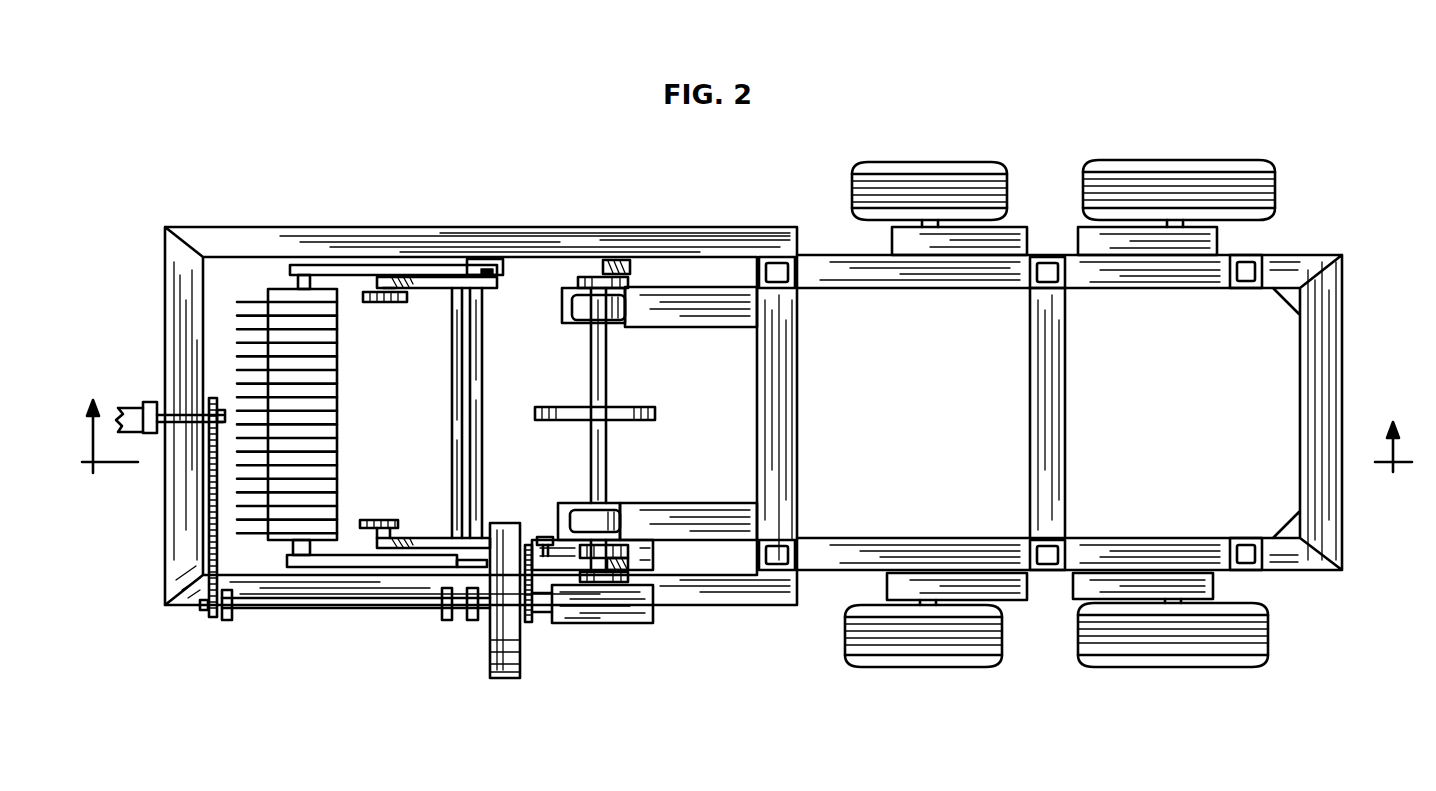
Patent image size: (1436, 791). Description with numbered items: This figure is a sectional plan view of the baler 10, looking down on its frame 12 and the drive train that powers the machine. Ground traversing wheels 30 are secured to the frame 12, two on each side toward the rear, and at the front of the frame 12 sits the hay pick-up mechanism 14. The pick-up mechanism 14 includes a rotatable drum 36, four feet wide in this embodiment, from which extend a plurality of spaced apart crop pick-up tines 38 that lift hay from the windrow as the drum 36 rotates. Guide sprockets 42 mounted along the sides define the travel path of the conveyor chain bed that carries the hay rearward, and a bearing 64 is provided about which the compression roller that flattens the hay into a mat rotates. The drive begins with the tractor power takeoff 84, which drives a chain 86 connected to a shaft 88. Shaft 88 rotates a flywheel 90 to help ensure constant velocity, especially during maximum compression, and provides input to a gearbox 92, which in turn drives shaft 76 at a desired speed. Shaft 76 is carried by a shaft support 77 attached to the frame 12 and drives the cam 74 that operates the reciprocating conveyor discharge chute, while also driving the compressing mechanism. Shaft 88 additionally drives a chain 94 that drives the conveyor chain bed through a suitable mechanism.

The baler 10 is at (996, 127).
The frame 12 is at (300, 214).
The hay pick-up mechanism 14 is at (363, 387).
The ground traversing wheels 30 is at (1085, 164).
The rotatable drum 36 is at (338, 424).
The crop pick-up tines 38 is at (243, 320).
The guide sprockets 42 is at (383, 303).
The bearing 64 is at (496, 275).
The driven cam 74 is at (655, 421).
The shaft 76 is at (608, 363).
The shaft support 77 is at (572, 313).
The tractor power takeoff 84 is at (138, 402).
The chain 86 is at (218, 557).
The shaft 88 is at (360, 620).
The flywheel 90 is at (510, 679).
The gearbox 92 is at (630, 624).
The chain 94 is at (530, 625).